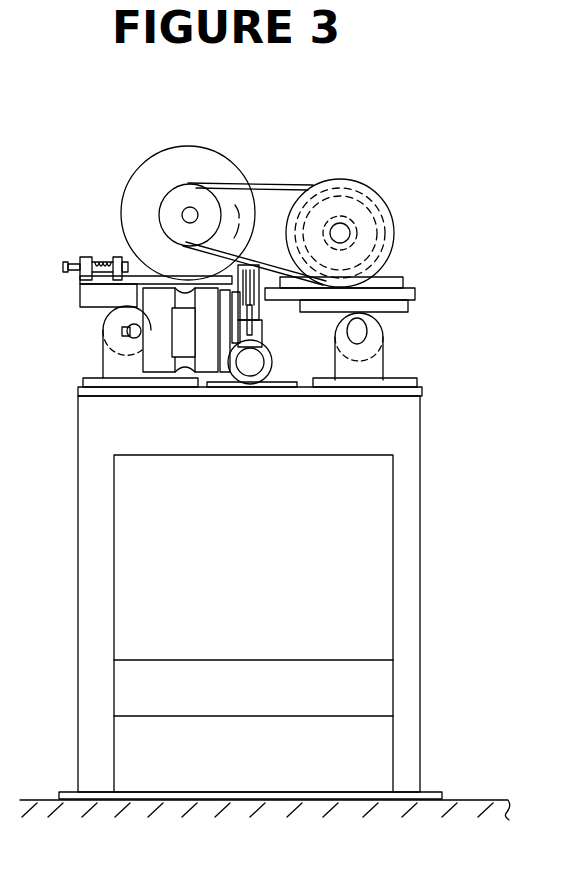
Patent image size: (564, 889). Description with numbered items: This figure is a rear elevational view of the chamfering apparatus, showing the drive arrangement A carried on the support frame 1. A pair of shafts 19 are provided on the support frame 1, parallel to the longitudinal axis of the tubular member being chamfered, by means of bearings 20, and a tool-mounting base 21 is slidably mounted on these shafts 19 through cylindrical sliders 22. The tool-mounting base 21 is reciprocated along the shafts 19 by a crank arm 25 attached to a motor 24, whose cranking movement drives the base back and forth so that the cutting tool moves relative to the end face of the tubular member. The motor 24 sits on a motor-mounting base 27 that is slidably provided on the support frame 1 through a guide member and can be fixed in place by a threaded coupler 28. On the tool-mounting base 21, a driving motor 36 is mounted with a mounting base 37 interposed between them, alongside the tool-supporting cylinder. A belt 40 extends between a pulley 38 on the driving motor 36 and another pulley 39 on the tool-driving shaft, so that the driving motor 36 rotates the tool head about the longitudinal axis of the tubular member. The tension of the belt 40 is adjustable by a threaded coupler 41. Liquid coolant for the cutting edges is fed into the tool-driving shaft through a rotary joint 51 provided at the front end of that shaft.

The frame 1 is at (97, 684).
The shaft 19 is at (363, 331).
The bearing 20 is at (133, 372).
The tool-mounting base 21 is at (410, 290).
The cylindrical slider 22 is at (108, 339).
The motor 24 is at (160, 357).
The crank arm 25 is at (250, 330).
The motor-mounting base 27 is at (212, 384).
The threaded coupler 28 is at (250, 367).
The driving motor 36 is at (228, 170).
The mounting base 37 is at (135, 286).
The pulley 38 is at (178, 216).
The pulley 39 is at (375, 200).
The belt 40 is at (291, 182).
The threaded coupler 41 is at (88, 283).
The rotary joint 51 is at (356, 229).
The drive assembly A is at (394, 202).